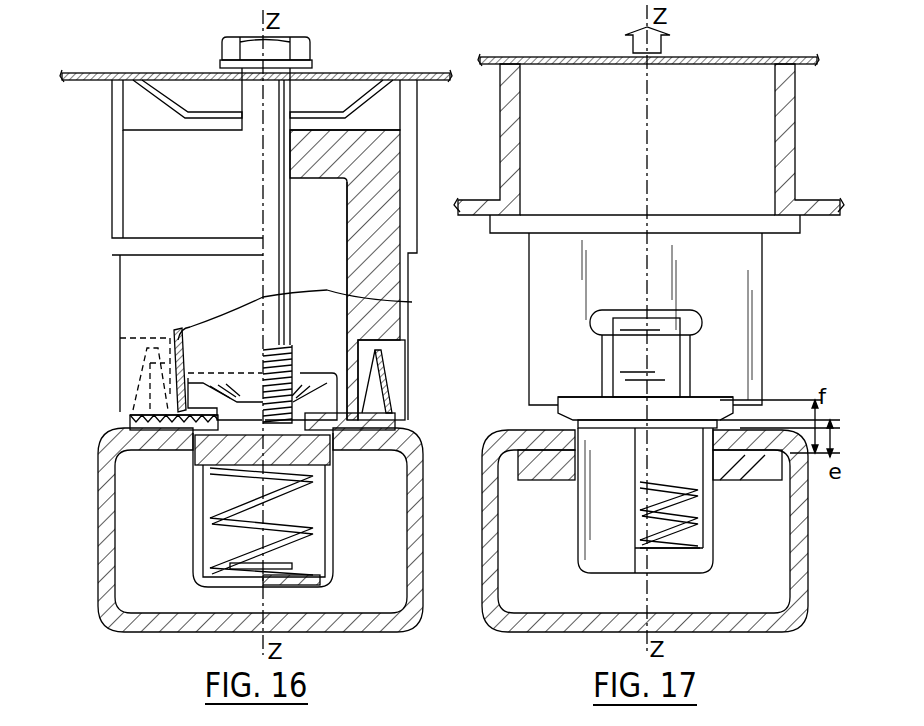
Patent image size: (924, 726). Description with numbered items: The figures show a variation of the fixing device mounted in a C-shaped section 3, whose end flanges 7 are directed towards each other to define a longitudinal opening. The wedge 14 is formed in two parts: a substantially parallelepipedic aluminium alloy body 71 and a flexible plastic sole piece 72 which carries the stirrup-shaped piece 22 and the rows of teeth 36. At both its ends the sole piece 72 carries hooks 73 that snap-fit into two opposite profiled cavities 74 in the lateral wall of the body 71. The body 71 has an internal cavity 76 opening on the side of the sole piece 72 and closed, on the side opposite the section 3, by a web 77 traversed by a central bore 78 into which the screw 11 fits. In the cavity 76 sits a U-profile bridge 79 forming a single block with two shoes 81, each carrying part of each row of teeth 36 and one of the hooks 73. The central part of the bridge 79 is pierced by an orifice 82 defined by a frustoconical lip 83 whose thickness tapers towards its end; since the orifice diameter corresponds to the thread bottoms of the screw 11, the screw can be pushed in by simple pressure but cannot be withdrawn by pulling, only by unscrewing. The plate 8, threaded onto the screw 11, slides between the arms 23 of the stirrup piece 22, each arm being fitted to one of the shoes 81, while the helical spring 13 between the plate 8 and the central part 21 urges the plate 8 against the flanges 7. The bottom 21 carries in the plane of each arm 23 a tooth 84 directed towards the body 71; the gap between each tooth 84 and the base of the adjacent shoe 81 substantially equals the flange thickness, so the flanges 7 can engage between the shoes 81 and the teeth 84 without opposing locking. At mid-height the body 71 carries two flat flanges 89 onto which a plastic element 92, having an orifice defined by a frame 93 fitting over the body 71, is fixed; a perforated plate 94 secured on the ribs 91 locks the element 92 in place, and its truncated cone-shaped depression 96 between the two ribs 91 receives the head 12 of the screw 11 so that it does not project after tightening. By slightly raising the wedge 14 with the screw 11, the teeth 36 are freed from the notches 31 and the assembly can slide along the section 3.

In FIG. 16, the C-shaped section 3 is at (90, 596).
In FIG. 17, the C-shaped section 3 is at (808, 598).
In FIG. 17, the end flange 7 is at (527, 433).
In FIG. 16, the plate 8 is at (310, 453).
In FIG. 17, the plate 8 is at (527, 462).
In FIG. 16, the screw 11 is at (307, 311).
In FIG. 16, the screw head 12 is at (300, 46).
In FIG. 16, the helical spring 13 is at (242, 522).
In FIG. 17, the helical spring 13 is at (657, 517).
In FIG. 16, the wedge 14 is at (100, 193).
In FIG. 16, the central part 21 is at (297, 585).
In FIG. 17, the central part 21 is at (672, 573).
In FIG. 16, the stirrup-shaped piece 22 is at (160, 516).
In FIG. 17, the stirrup-shaped piece 22 is at (540, 535).
In FIG. 17, the arm 23 is at (600, 495).
In FIG. 17, the notch 31 is at (568, 427).
In FIG. 16, the tooth 36 is at (128, 455).
In FIG. 17, the tooth 36 is at (593, 412).
In FIG. 16, the body 71 is at (118, 352).
In FIG. 17, the body 71 is at (738, 258).
In FIG. 16, the sole piece 72 is at (122, 420).
In FIG. 17, the sole piece 72 is at (545, 393).
In FIG. 16, the hook 73 is at (387, 385).
In FIG. 17, the hook 73 is at (663, 350).
In FIG. 16, the profiled cavity 74 is at (395, 352).
In FIG. 17, the profiled cavity 74 is at (693, 320).
In FIG. 16, the internal cavity 76 is at (326, 301).
In FIG. 16, the web 77 is at (327, 160).
In FIG. 16, the central bore 78 is at (297, 110).
In FIG. 16, the bridge 79 is at (310, 363).
In FIG. 16, the shoe 81 is at (390, 420).
In FIG. 17, the shoe 81 is at (583, 400).
In FIG. 16, the orifice 82 is at (292, 404).
In FIG. 16, the frustoconical lip 83 is at (235, 380).
In FIG. 16, the tooth 84 is at (328, 505).
In FIG. 17, the tooth 84 is at (713, 543).
In FIG. 17, the flat flange 89 is at (505, 233).
In FIG. 16, the rib 91 is at (118, 105).
In FIG. 17, the plastic material element 92 is at (802, 175).
In FIG. 17, the frame 93 is at (784, 105).
In FIG. 16, the perforated plate 94 is at (447, 72).
In FIG. 17, the perforated plate 94 is at (802, 57).
In FIG. 16, the truncated cone-shaped depression 96 is at (358, 92).